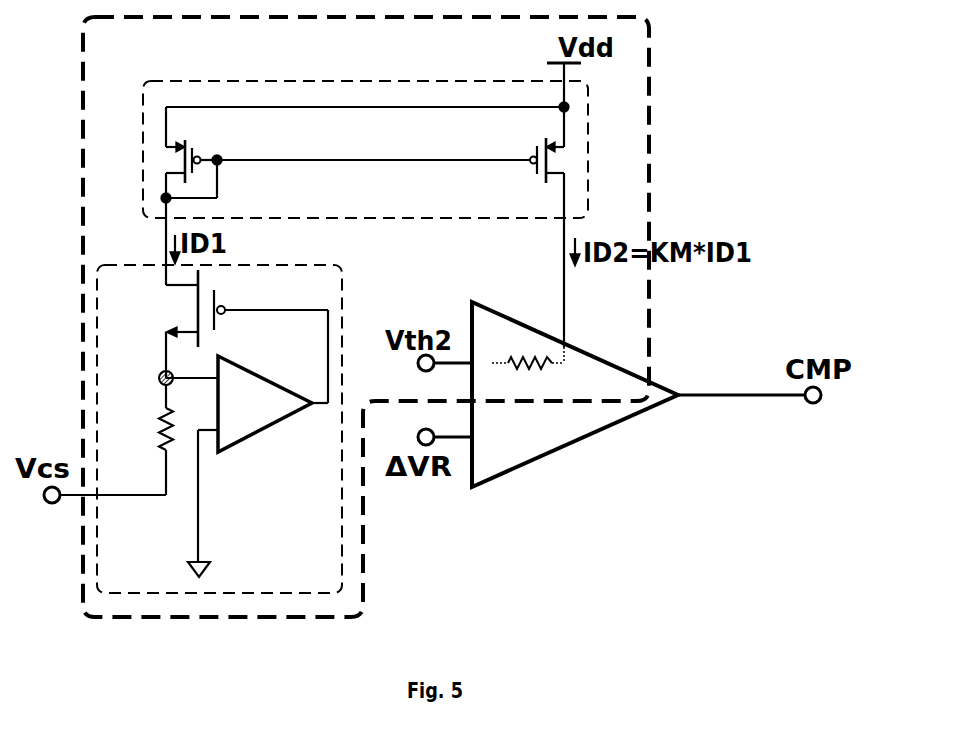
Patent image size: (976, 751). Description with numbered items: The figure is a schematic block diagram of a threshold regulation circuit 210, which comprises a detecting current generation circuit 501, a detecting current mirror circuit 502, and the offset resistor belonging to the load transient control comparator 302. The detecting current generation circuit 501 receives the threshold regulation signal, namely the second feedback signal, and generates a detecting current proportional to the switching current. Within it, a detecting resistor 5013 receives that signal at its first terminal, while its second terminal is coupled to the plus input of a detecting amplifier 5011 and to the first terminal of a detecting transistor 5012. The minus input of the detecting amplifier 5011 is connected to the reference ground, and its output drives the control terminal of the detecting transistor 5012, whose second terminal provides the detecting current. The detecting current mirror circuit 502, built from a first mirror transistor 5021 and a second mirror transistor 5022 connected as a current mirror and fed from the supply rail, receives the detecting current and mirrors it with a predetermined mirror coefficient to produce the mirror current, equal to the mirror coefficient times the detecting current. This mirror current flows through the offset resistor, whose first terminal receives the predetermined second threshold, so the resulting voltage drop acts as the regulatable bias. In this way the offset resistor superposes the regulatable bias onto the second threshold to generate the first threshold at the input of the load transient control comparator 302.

The threshold regulation circuit 210 is at (650, 127).
The detecting current mirror circuit 502 is at (365, 125).
The first mirror transistor 5021 is at (198, 146).
The second mirror transistor 5022 is at (535, 147).
The detecting current generation circuit 501 is at (255, 415).
The detecting amplifier 5011 is at (288, 418).
The detecting transistor 5012 is at (222, 302).
The detecting resistor 5013 is at (158, 422).
The load transient control comparator 302 is at (588, 437).